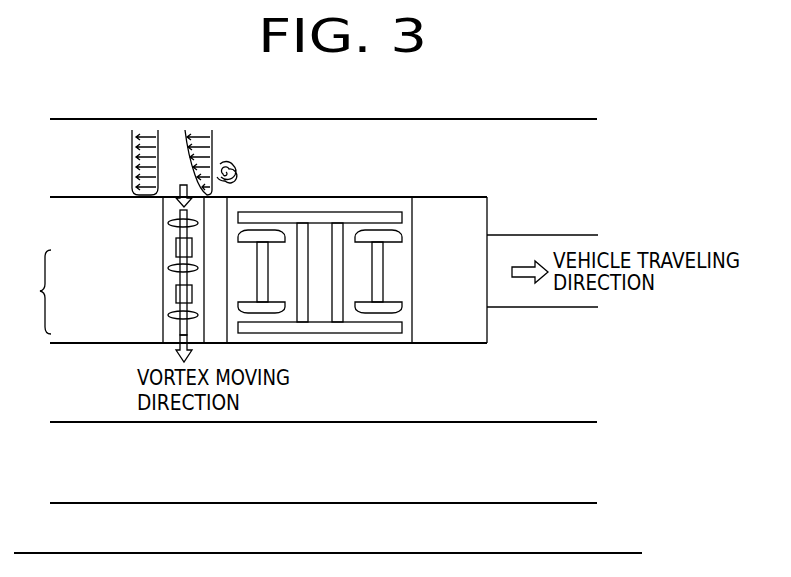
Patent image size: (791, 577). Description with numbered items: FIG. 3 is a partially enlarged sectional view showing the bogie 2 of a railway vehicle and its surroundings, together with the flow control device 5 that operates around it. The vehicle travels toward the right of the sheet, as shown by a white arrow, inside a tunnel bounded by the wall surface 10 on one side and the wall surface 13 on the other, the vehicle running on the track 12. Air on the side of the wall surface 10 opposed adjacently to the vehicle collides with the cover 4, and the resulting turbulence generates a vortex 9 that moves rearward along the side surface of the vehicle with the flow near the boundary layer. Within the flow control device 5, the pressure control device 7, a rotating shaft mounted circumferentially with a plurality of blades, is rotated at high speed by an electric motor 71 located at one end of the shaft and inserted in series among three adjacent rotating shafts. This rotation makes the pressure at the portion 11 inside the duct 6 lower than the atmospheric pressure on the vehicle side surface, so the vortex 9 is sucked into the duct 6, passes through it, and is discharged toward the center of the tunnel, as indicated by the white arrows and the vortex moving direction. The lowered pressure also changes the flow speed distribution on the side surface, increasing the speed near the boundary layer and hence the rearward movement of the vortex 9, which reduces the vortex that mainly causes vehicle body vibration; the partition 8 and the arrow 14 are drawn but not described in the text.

The bogie 2 is at (322, 212).
The cover 4 is at (78, 216).
The flow control device 5 is at (110, 272).
The duct 6 is at (168, 330).
The pressure control device 7 is at (165, 322).
The electric motor 71 is at (176, 247).
The partition wall 8 is at (217, 206).
The vortex 9 is at (235, 165).
The wall surface of the tunnel 10 is at (469, 119).
The portion inside the duct 11 is at (171, 213).
The track 12 is at (477, 422).
The wall surface of the tunnel 13 is at (418, 553).
The vortex moving direction arrow 14 is at (178, 352).